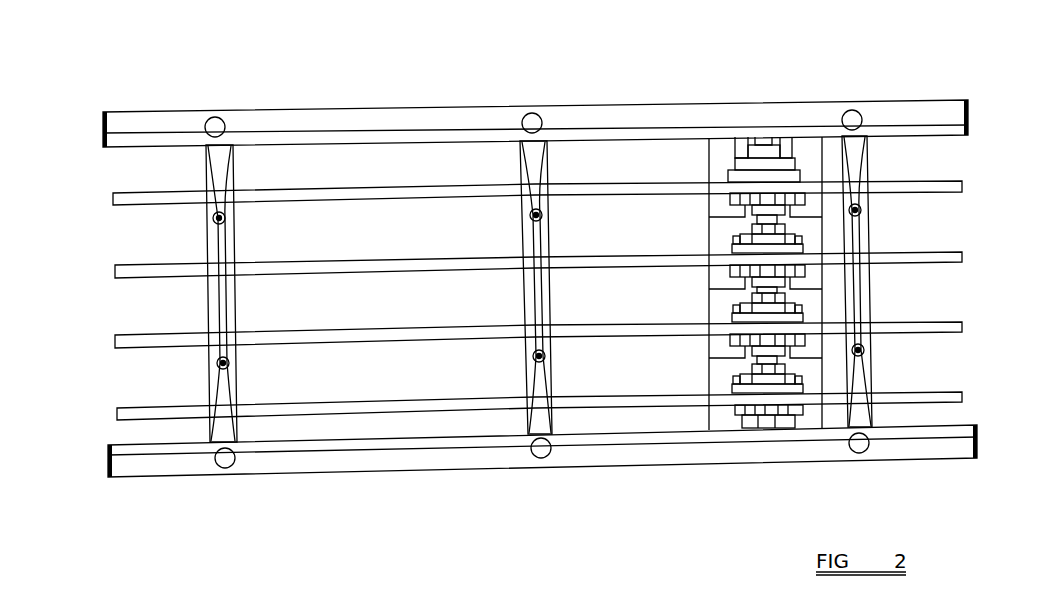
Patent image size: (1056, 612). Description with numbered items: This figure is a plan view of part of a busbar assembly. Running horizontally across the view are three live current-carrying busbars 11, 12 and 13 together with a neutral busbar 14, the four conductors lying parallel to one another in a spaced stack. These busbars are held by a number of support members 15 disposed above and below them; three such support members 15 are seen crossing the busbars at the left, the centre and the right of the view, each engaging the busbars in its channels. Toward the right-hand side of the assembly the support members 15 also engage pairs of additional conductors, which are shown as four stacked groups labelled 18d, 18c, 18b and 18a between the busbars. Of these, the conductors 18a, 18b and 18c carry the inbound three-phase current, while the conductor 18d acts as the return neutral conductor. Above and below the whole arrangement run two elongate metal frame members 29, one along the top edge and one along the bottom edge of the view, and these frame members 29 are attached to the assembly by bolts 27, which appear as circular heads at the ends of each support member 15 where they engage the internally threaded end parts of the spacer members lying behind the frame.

The live current carrying busbar 11 is at (964, 397).
The live current carrying busbar 12 is at (964, 326).
The live current carrying busbar 13 is at (963, 258).
The neutral busbar 14 is at (964, 184).
The support member 15 is at (874, 230).
The additional conductor 18a is at (708, 377).
The additional conductor 18b is at (708, 303).
The additional conductor 18c is at (708, 233).
The additional conductor 18d is at (708, 168).
The bolt 27 is at (532, 113).
The metal frame member 29 is at (727, 104).